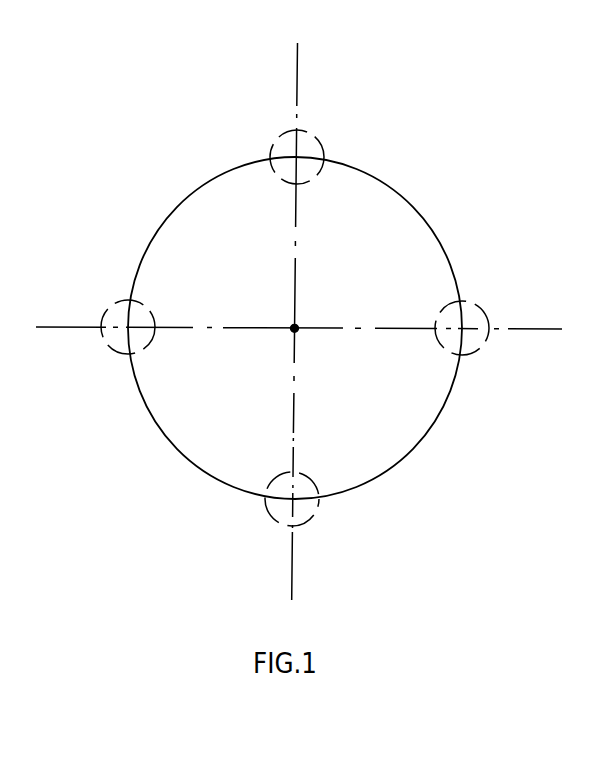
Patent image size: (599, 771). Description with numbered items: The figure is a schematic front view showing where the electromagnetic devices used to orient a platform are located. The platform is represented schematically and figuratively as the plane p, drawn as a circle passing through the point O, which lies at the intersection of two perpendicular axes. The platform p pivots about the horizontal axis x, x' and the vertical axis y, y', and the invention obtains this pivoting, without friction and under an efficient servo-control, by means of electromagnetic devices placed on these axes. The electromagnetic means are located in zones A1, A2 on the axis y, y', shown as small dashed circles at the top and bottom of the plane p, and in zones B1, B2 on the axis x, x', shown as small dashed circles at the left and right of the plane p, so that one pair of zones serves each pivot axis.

The plane P is at (175, 423).
The point O is at (291, 333).
The zone A1 is at (281, 134).
The zone A2 is at (279, 523).
The zone B1 is at (118, 302).
The zone B2 is at (465, 303).
The axis x is at (299, 327).
The axis y is at (294, 316).